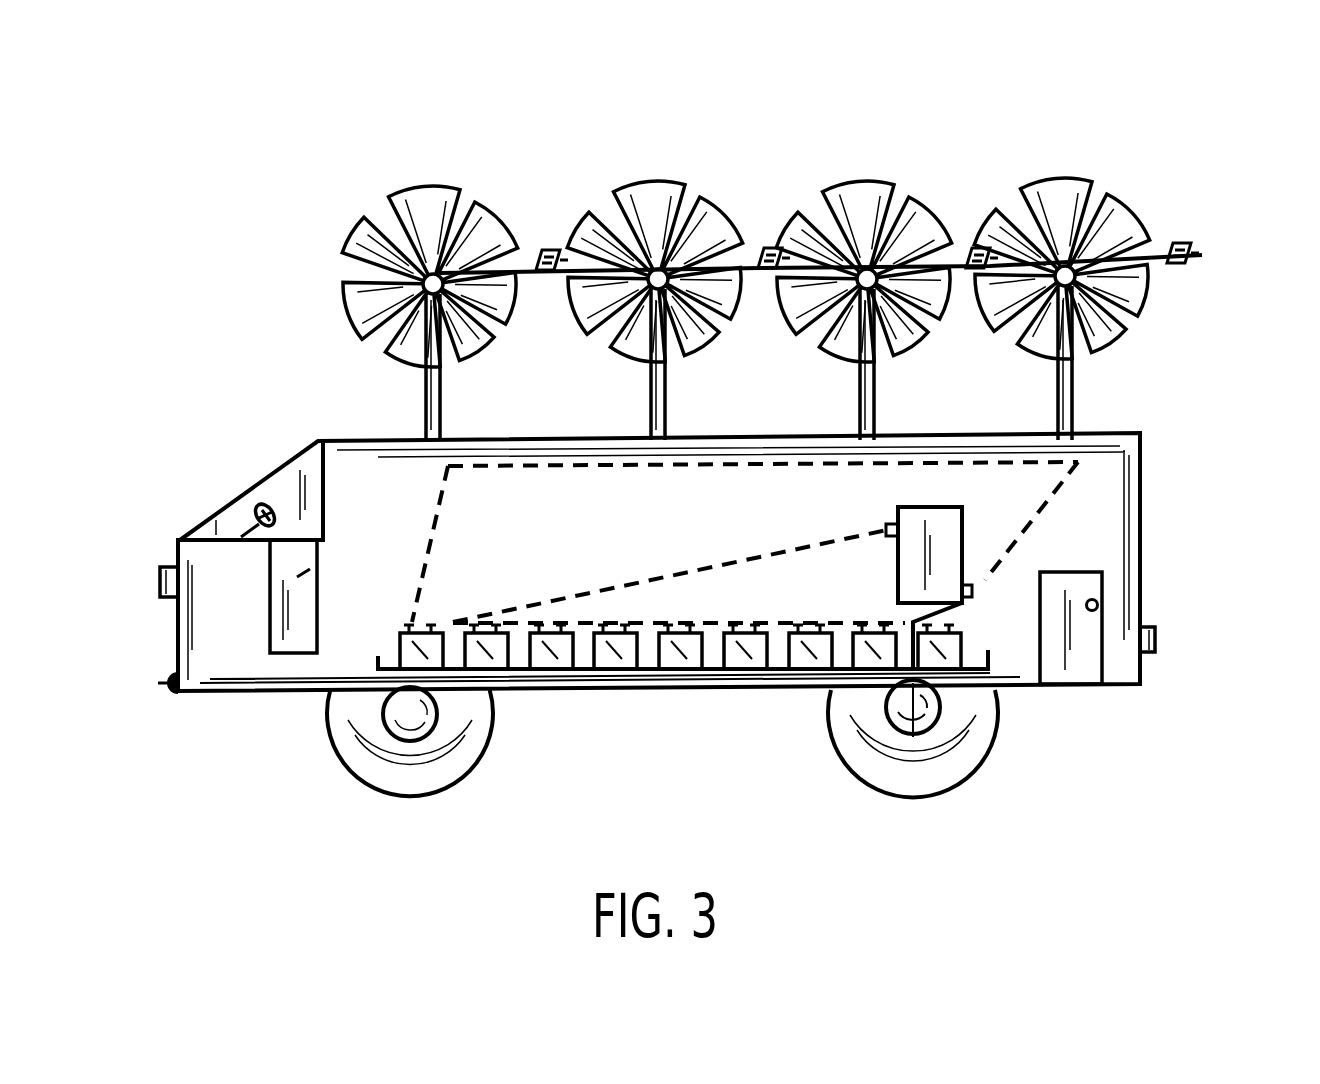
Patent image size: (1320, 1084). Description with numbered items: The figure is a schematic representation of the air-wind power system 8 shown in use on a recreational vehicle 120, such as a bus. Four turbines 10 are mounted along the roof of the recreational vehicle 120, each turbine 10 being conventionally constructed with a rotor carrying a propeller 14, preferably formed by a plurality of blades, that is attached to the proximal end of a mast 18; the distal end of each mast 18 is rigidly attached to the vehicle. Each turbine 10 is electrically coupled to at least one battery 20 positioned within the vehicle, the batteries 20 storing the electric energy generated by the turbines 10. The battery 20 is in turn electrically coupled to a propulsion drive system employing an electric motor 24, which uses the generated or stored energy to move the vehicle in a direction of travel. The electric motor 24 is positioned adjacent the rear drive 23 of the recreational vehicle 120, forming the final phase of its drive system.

The air-wind power system 8 is at (252, 312).
The turbine 10 is at (716, 122).
The propeller 14 is at (391, 197).
The mast 18 is at (425, 393).
The battery 20 is at (683, 655).
The rear drive 23 is at (938, 716).
The electric motor 24 is at (953, 542).
The recreational vehicle 120 is at (245, 695).